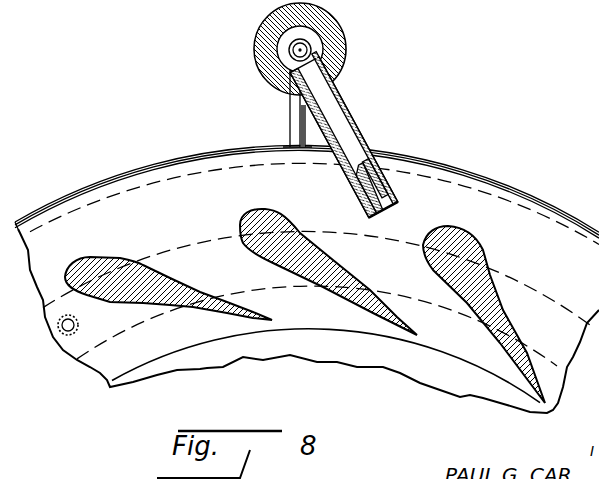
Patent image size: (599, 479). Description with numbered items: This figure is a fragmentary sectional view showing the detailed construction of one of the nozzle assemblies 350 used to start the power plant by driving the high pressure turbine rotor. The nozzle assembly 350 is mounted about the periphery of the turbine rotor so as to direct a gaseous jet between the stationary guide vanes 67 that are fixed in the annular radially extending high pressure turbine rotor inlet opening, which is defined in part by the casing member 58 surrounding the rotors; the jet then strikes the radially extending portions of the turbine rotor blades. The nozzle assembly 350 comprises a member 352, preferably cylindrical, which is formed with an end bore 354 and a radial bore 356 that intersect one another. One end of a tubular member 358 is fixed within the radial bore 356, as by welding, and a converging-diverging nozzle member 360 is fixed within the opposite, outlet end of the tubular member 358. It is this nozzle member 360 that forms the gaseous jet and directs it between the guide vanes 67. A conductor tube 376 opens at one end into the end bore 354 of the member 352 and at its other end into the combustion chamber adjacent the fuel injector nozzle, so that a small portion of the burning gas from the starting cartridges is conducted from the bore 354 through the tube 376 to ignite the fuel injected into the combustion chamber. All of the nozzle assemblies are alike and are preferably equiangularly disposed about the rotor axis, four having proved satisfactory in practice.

The casing member 58 is at (503, 182).
The guide vanes 67 is at (182, 280).
The nozzle assembly 350 is at (336, 135).
The member 352 is at (308, 49).
The end bore 354 is at (256, 40).
The radial bore 356 is at (292, 98).
The tubular member 358 is at (362, 128).
The converging-diverging nozzle member 360 is at (380, 174).
The conductor tube 376 is at (300, 120).